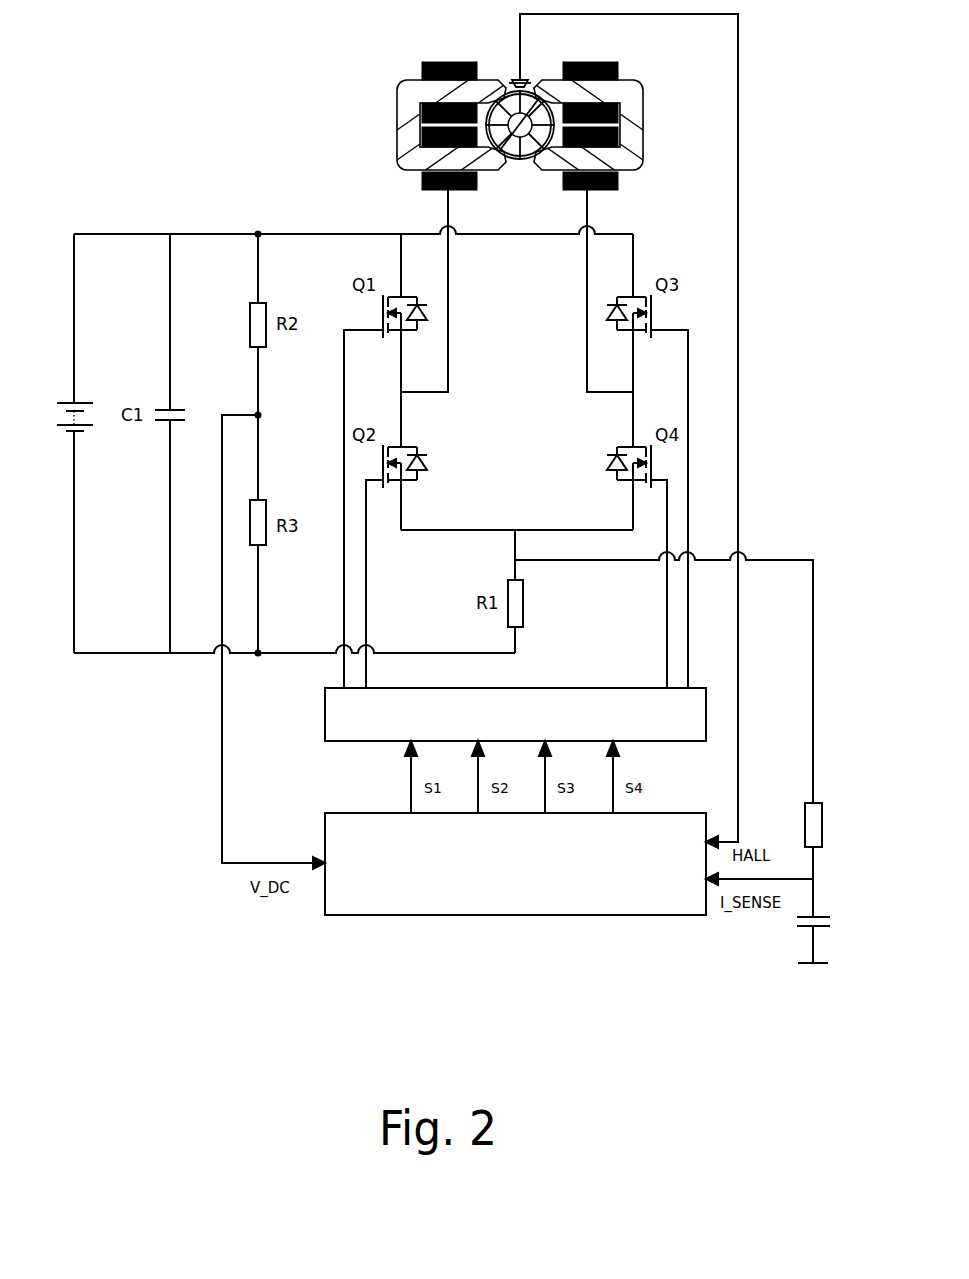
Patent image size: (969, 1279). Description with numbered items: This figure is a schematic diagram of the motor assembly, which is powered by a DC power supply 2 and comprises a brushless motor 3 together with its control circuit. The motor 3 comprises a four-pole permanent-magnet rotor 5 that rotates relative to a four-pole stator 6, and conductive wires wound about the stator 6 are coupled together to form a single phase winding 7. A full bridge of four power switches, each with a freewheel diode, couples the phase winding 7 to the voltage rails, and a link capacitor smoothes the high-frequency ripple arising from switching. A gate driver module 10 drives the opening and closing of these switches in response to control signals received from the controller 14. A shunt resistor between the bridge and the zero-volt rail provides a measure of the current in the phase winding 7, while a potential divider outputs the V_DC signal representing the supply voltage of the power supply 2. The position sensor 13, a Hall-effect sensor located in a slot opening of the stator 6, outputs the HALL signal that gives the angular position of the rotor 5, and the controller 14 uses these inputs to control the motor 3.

The DC power supply 2 is at (58, 418).
The brushless motor 3 is at (502, 204).
The permanent-magnet rotor 5 is at (521, 160).
The stator 6 is at (397, 118).
The single phase winding 7 is at (449, 62).
The gate driver module 10 is at (325, 716).
The position sensor 13 is at (515, 82).
The controller 14 is at (585, 915).